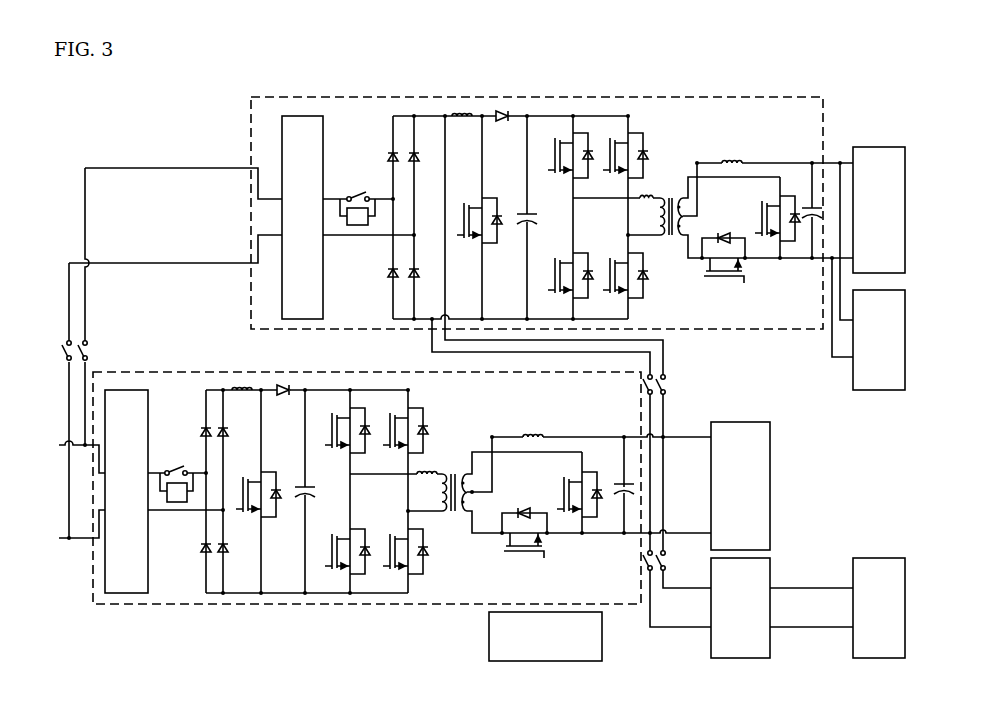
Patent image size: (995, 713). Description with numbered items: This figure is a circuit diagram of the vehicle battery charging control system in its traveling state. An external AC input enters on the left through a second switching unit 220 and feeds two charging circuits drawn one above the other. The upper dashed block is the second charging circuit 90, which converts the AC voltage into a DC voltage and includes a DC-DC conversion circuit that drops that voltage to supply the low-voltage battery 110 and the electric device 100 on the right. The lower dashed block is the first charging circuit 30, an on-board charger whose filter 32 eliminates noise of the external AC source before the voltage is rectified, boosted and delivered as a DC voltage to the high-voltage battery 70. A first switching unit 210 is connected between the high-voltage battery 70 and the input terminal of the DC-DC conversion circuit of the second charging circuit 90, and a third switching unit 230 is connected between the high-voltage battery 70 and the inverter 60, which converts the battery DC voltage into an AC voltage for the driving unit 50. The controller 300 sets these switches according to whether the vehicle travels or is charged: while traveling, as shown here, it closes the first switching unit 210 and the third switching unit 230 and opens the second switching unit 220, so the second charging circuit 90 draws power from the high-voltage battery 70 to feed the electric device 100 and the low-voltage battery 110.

The first charging circuit 30 is at (402, 484).
The filter 32 is at (125, 593).
The driving unit 50 is at (880, 558).
The inverter 60 is at (771, 643).
The high-voltage battery 70 is at (771, 478).
The second charging circuit 90 is at (790, 330).
The electric device 100 is at (882, 390).
The low-voltage battery 110 is at (876, 147).
The first switching unit 210 is at (666, 383).
The second switching unit 220 is at (83, 352).
The third switching unit 230 is at (666, 561).
The controller 300 is at (489, 636).